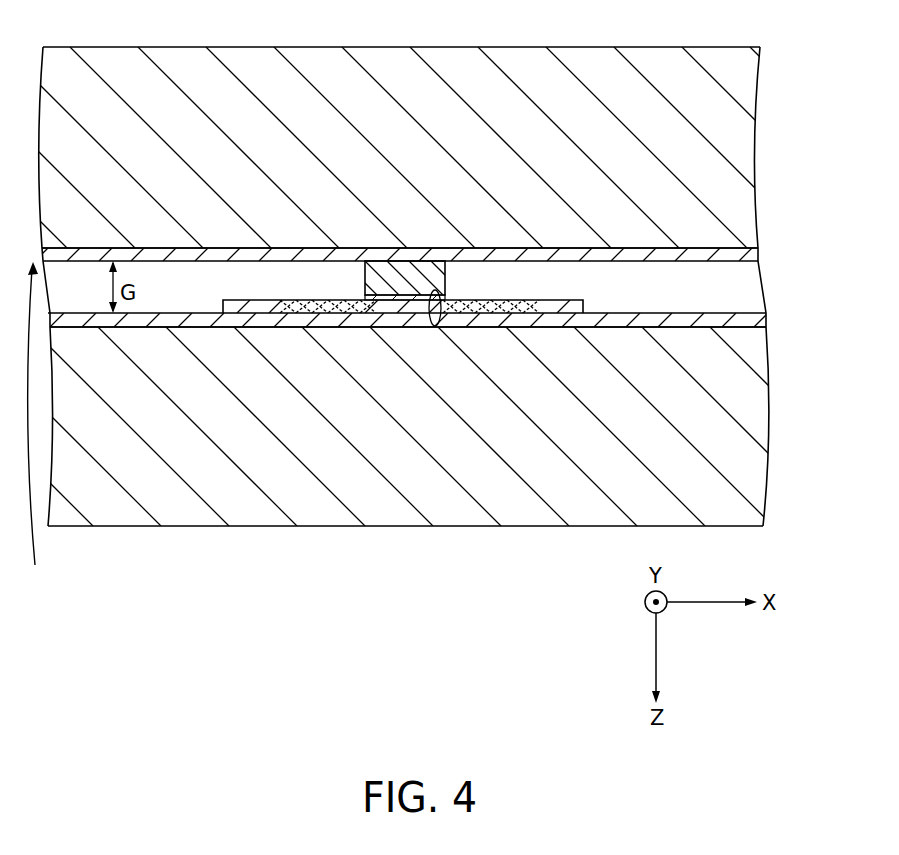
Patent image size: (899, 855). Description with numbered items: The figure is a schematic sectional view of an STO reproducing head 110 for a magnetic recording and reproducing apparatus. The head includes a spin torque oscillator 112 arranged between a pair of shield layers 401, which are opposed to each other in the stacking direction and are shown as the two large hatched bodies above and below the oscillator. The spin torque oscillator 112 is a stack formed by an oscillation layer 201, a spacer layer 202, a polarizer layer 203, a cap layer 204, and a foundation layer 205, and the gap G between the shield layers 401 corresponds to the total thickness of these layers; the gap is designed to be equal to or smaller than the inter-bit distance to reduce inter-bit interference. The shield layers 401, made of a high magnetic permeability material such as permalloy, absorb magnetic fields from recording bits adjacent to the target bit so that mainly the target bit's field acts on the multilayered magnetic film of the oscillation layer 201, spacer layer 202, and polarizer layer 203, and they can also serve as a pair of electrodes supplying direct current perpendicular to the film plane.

The STO reproducing head 110 is at (113, 42).
The spin torque oscillator 112 is at (33, 431).
The oscillation layer 201 is at (575, 306).
The spacer layer 202 is at (366, 297).
The polarizer layer 203 is at (446, 272).
The cap layer 204 is at (759, 252).
The foundation layer 205 is at (763, 318).
The shield layers 401 is at (248, 64).